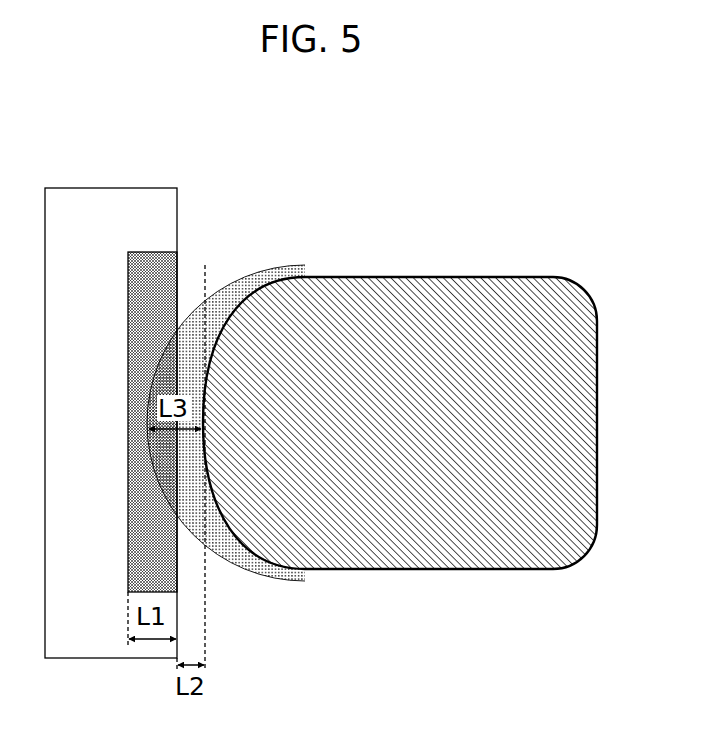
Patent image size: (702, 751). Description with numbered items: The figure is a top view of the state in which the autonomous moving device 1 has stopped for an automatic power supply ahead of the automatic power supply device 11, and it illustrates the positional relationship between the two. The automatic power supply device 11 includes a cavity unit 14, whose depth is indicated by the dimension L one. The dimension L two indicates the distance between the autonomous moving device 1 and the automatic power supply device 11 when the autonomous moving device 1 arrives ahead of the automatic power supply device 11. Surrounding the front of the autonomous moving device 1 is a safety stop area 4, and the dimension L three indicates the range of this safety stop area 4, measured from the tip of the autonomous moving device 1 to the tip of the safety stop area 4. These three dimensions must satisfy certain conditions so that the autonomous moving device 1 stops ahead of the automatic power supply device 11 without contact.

The autonomous moving device 1 is at (447, 330).
The safety stop area 4 is at (236, 304).
The automatic power supply device 11 is at (85, 242).
The cavity unit 14 is at (181, 272).